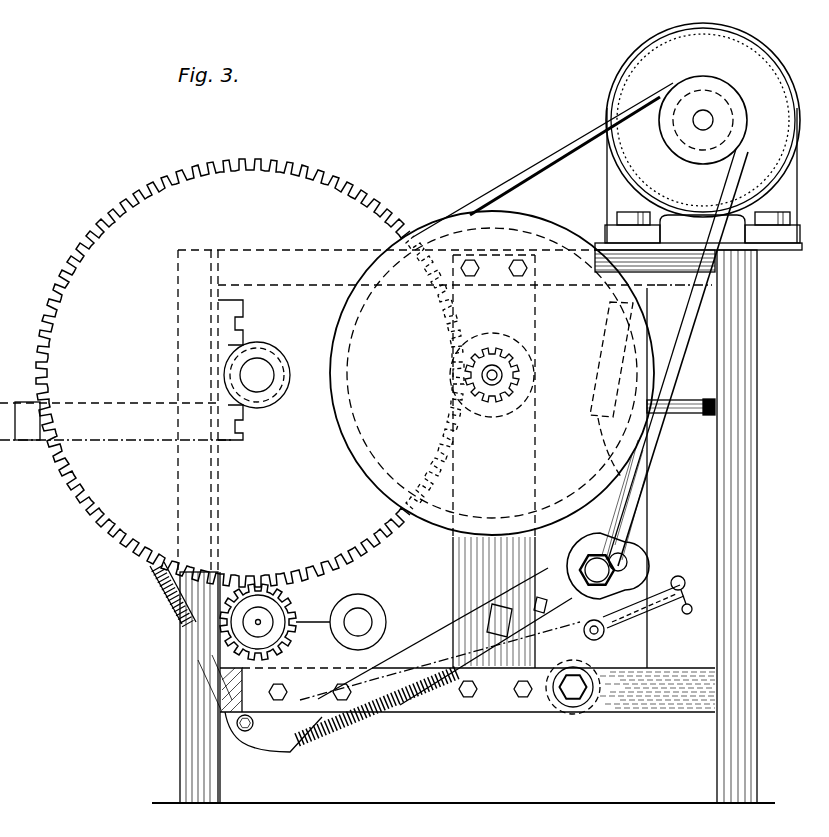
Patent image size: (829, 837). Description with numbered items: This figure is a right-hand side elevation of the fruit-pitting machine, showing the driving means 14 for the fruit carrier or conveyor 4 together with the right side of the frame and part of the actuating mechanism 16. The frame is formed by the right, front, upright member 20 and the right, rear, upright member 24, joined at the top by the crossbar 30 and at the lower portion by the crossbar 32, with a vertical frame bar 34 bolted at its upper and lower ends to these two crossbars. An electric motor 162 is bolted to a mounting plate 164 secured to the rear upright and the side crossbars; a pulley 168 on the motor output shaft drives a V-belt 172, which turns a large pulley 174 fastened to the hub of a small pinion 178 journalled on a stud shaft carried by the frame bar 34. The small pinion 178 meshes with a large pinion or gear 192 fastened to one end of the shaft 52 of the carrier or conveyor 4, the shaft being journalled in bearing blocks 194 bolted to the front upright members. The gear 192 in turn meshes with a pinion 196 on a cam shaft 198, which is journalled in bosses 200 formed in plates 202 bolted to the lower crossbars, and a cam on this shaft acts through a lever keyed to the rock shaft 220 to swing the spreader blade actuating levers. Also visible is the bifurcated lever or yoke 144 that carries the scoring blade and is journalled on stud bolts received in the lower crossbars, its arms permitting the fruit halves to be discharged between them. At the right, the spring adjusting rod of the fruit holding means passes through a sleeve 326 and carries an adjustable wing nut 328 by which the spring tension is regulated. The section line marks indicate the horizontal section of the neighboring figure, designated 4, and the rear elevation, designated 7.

The fruit carrier or conveyor 4 is at (198, 375).
The section line 7- 7 is at (758, 27).
The driving means 14 is at (481, 180).
The actuating mechanism 16 is at (404, 599).
The right, front, upright member 20 is at (195, 690).
The right, rear, upright member 24 is at (740, 774).
The crossbar 30 is at (620, 258).
The crossbar 32 is at (628, 712).
The vertical frame bar 34 is at (531, 556).
The shaft 52 is at (262, 372).
The bifurcated lever or yoke 144 is at (632, 528).
The electric motor 162 is at (632, 78).
The mounting plate 164 is at (640, 218).
The pulley 168 is at (693, 150).
The V-belt 172 is at (549, 160).
The large pulley 174 is at (620, 480).
The small pinion 178 is at (522, 360).
The large pinion or gear 192 is at (110, 538).
The bearing blocks 194 is at (240, 342).
The pinion 196 is at (271, 590).
The cam shaft 198 is at (255, 627).
The bosses 200 is at (238, 617).
The plates 202 is at (374, 716).
The rock shaft 220 is at (367, 628).
The sleeve 326 is at (634, 623).
The adjustable wing nut 328 is at (687, 614).